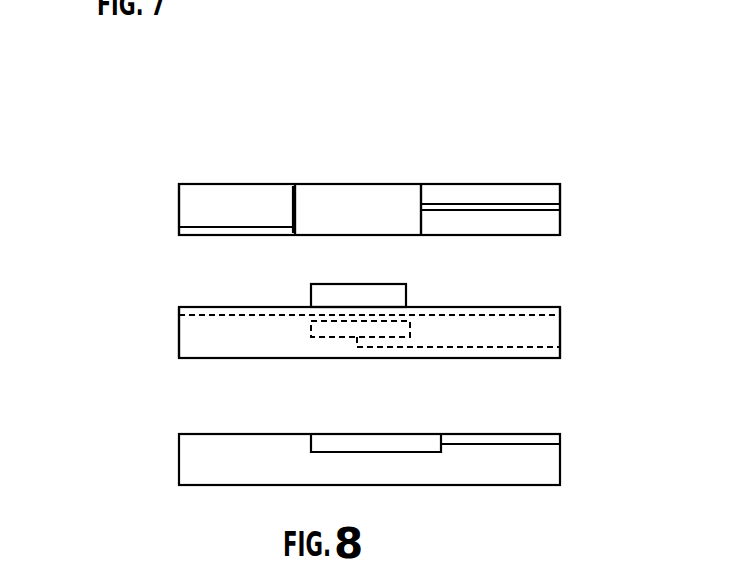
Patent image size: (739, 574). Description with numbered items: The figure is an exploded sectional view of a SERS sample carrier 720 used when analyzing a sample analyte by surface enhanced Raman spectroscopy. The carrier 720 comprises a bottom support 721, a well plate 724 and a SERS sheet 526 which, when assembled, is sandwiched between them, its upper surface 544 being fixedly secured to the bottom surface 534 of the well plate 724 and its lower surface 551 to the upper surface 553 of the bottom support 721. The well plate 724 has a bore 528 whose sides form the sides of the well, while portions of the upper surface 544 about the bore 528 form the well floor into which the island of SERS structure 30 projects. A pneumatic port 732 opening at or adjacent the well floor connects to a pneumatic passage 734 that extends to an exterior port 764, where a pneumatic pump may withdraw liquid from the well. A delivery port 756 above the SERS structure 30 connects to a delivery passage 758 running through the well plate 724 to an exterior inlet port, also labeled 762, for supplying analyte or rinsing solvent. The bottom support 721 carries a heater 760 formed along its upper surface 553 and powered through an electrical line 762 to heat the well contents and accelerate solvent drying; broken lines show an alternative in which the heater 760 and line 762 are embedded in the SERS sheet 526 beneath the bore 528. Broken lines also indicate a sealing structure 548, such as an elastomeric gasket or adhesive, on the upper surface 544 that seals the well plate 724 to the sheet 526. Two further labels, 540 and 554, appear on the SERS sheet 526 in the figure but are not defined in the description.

The SERS sample carrier 720 is at (422, 103).
The well plate 724 is at (178, 216).
The exterior port 764 is at (178, 228).
The pneumatic passage 734 is at (236, 225).
The pneumatic port 732 is at (292, 225).
The bore 528 is at (297, 212).
The delivery port 756 is at (430, 192).
The delivery passage 758 is at (498, 207).
The electrical line 762 is at (560, 207).
The bottom surface of well plate 534 is at (515, 236).
The middle substrate 540 is at (177, 352).
The SERS sheet 526 is at (170, 338).
The upper surface of SERS sheet 544 is at (213, 307).
The SERS structure 30 is at (408, 290).
The top surface of middle substrate 554 is at (533, 307).
The sealing structure 548 is at (522, 320).
The lower surface of SERS sheet 551 is at (232, 367).
The heater 760 is at (311, 330).
The bottom support 721 is at (178, 468).
The upper surface of bottom support 553 is at (222, 434).